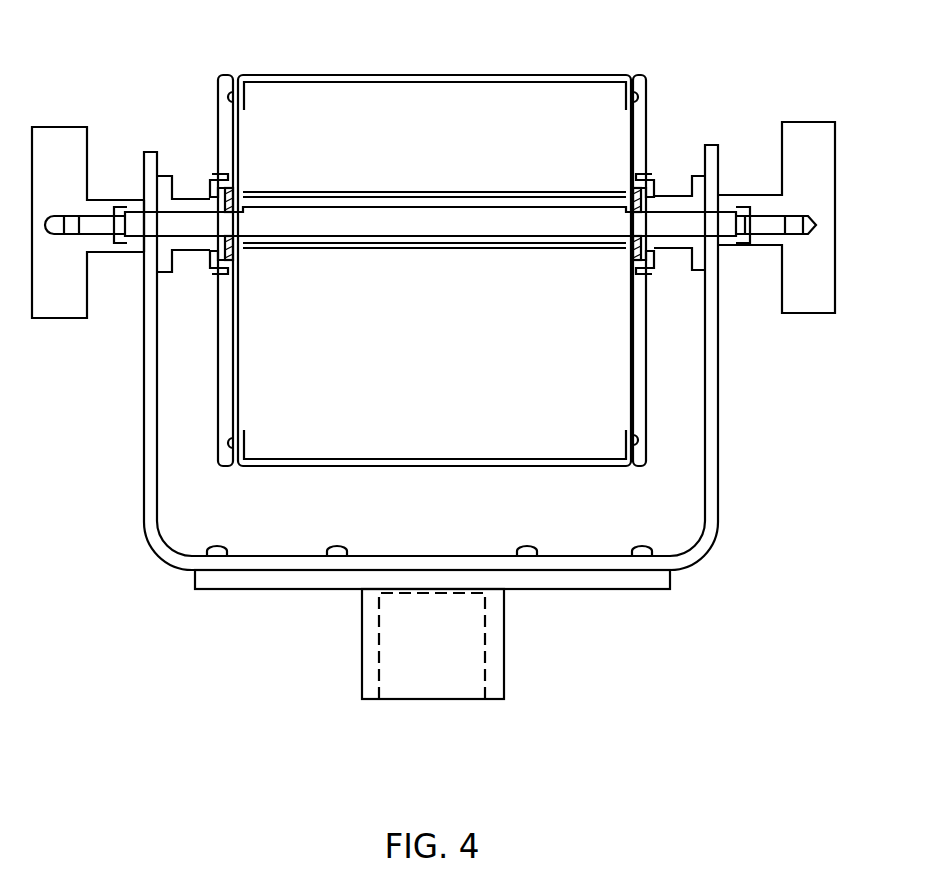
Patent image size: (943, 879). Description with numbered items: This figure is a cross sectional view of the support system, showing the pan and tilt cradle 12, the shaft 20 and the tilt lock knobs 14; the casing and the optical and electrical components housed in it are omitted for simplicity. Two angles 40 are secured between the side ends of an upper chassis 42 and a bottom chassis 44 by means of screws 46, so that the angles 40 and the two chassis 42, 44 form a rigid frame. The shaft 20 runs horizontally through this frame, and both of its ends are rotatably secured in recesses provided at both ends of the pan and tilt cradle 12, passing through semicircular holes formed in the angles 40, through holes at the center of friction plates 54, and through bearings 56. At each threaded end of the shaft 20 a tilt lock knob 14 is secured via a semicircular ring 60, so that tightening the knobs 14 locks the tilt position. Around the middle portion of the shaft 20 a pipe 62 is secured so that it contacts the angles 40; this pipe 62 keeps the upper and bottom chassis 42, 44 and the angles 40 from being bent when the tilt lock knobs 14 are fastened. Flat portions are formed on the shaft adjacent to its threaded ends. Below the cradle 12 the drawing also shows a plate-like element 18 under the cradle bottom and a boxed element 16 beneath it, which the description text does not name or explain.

The pan and tilt cradle 12 is at (144, 412).
The tilt lock knobs 14 is at (47, 312).
The motor 16 is at (393, 636).
The base plate 18 is at (235, 590).
The shaft 20 is at (687, 222).
The angles 40 is at (233, 375).
The upper chassis 42 is at (361, 75).
The bottom chassis 44 is at (318, 468).
The screws 46 is at (228, 97).
The friction plates 54 is at (228, 200).
The bearings 56 is at (170, 185).
The semicircular rings 60 is at (142, 200).
The pipe 62 is at (385, 197).